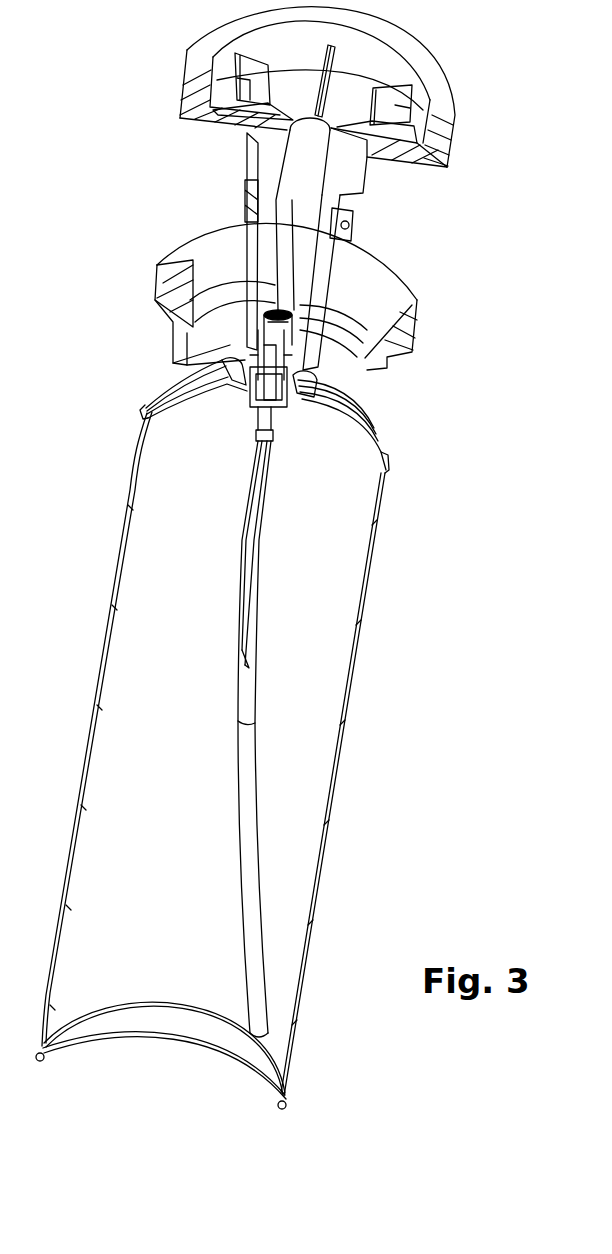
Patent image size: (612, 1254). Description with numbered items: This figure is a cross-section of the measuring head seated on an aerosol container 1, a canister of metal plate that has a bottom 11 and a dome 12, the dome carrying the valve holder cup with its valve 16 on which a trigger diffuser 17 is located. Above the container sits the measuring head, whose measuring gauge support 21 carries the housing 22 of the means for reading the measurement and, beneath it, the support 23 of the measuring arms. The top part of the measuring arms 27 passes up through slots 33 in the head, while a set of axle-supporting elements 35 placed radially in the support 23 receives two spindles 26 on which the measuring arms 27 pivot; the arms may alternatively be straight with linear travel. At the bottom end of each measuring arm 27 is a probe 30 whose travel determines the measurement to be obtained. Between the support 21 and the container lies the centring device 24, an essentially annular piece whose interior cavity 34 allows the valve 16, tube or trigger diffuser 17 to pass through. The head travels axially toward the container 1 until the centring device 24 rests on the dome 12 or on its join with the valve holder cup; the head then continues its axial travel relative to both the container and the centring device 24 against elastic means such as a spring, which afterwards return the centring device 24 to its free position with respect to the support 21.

The aerosol container 1 is at (320, 668).
The bottom of the aerosol container 11 is at (147, 1018).
The dome of the aerosol container 12 is at (190, 380).
The valve 16 is at (288, 403).
The trigger diffuser 17 is at (287, 333).
The support of the measuring device 21 is at (210, 40).
The housing of the means for reading the measurement 22 is at (373, 78).
The support of the measuring arms 23 is at (273, 178).
The centring device 24 is at (178, 258).
The spindles of the mechanical measuring devices 26 is at (351, 226).
The measuring arms 27 is at (242, 292).
The probes 30 is at (240, 380).
The slots for allowing through the top part of the measuring arms 33 is at (287, 113).
The interior cavity of the centring device 34 is at (310, 390).
The axle-supporting elements 35 is at (350, 212).